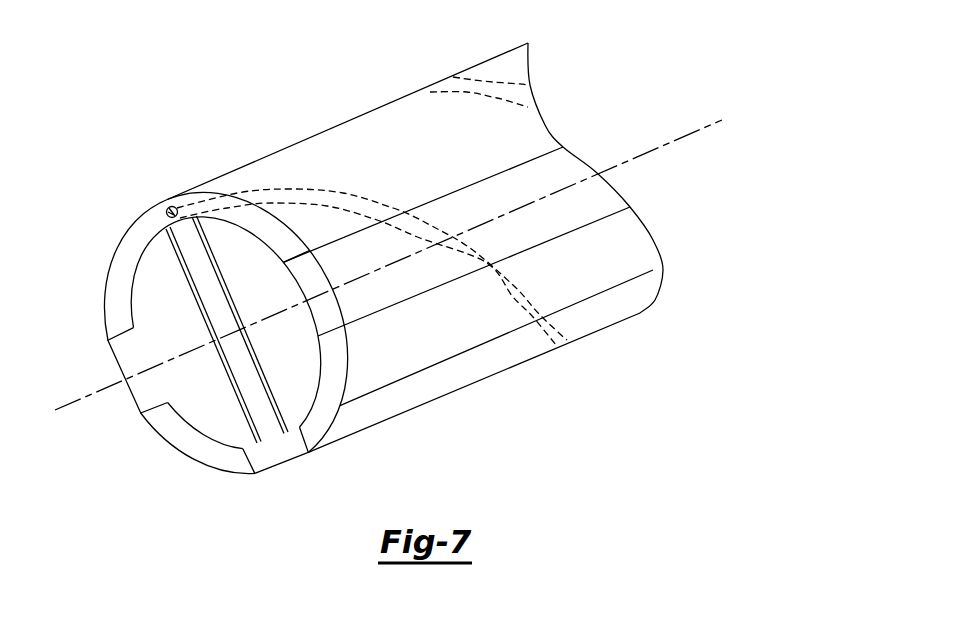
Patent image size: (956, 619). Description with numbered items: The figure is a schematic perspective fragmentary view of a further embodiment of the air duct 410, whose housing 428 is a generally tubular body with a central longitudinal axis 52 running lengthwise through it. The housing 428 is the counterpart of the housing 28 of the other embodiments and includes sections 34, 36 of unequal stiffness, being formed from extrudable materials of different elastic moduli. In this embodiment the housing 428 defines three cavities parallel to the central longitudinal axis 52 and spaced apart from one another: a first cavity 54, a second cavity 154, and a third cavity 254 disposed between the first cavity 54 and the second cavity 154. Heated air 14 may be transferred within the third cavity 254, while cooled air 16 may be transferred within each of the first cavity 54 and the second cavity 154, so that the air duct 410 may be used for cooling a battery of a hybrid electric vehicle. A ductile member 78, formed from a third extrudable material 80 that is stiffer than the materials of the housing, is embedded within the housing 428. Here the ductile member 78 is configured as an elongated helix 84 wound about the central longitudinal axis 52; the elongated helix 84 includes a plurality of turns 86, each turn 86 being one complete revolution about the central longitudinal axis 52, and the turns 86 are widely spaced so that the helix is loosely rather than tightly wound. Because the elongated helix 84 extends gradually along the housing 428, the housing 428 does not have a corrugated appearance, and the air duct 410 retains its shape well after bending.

The air duct 410 is at (147, 107).
The housing 428 is at (318, 77).
The section 34 is at (92, 247).
The housing 28 is at (187, 460).
The first cavity 54 is at (158, 285).
The section 36 is at (110, 355).
The cooled air 16 is at (200, 398).
The heated air 14 is at (192, 253).
The third cavity 254 is at (260, 416).
The second cavity 154 is at (295, 342).
The ductile member 78 is at (166, 212).
The third extrudable material 80 is at (316, 202).
The turn 86 is at (488, 90).
The elongated helix 84 is at (562, 348).
The central longitudinal axis 52 is at (672, 140).